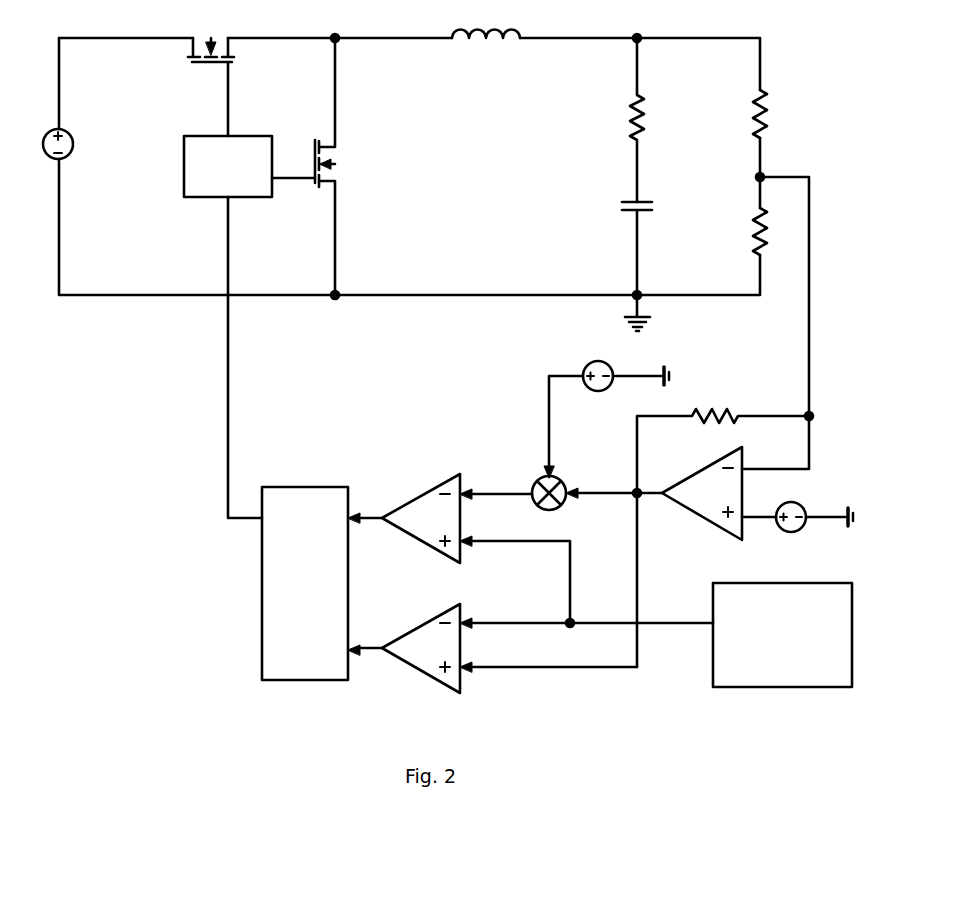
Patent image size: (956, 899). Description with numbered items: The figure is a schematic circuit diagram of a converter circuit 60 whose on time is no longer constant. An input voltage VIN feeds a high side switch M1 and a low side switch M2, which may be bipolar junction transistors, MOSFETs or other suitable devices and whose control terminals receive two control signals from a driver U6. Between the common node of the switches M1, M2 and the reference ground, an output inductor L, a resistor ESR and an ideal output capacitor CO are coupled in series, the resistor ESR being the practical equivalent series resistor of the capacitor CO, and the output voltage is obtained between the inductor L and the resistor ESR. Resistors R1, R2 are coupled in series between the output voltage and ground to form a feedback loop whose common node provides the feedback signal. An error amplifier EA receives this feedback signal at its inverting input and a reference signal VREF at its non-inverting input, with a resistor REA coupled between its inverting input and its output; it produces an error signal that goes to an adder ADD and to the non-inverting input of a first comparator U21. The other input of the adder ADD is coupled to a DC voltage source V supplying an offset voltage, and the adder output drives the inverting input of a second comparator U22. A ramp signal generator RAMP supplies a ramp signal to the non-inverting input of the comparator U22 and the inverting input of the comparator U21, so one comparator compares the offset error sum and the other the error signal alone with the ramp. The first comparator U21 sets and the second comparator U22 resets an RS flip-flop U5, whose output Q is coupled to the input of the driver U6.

The converter circuit 60 is at (136, 462).
The input voltage VIN is at (73, 158).
The high side switch M1 is at (211, 87).
The low side switch M2 is at (303, 166).
The driver U6 is at (228, 327).
The output inductor L is at (486, 48).
The resistor ESR is at (664, 120).
The ideal output capacitor CO is at (657, 236).
The resistor R1 is at (777, 114).
The resistor R2 is at (777, 231).
The DC voltage source V is at (606, 408).
The adder ADD is at (554, 494).
The error amplifier EA is at (687, 538).
The resistor REA is at (717, 396).
The reference signal VREF is at (797, 533).
The RS flip-flop U5 is at (305, 571).
The second comparator U22 is at (459, 548).
The first comparator U21 is at (530, 660).
The ramp signal generator RAMP is at (782, 635).